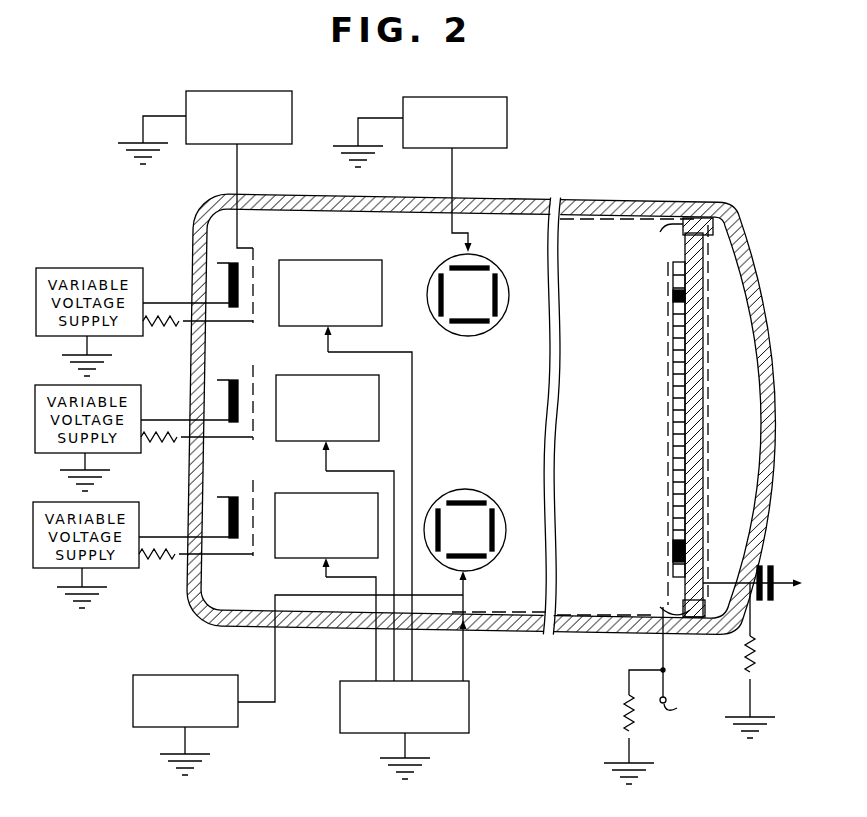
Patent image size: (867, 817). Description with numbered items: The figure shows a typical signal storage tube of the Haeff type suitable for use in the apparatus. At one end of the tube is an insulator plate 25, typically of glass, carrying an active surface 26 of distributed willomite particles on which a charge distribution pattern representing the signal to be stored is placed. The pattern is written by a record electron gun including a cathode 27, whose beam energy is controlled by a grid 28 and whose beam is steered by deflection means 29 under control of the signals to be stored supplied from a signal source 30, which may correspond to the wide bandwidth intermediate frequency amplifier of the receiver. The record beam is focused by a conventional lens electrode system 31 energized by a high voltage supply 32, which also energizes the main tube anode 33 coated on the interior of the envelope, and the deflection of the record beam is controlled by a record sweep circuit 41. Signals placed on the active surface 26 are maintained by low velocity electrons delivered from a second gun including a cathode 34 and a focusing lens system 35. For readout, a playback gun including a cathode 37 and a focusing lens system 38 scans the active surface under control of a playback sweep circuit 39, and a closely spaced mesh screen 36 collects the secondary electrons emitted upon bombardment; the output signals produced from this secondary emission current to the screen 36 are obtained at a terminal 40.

The insulator plate 25 is at (700, 216).
The active surface 26 is at (685, 336).
The cathode 27 is at (229, 272).
The grid 28 is at (256, 252).
The deflection means 29 is at (480, 259).
The signal source 30 is at (218, 91).
The lens electrode system 31 is at (347, 260).
The high voltage supply 32 is at (371, 681).
The main tube anode 33 is at (482, 614).
The cathode 34 is at (229, 388).
The focusing lens system 35 is at (344, 375).
The screen 36 is at (668, 495).
The cathode 37 is at (229, 505).
The focusing lens system 38 is at (343, 493).
The playback sweep circuit 39 is at (163, 675).
The terminal 40 is at (651, 695).
The record sweep circuit 41 is at (430, 97).